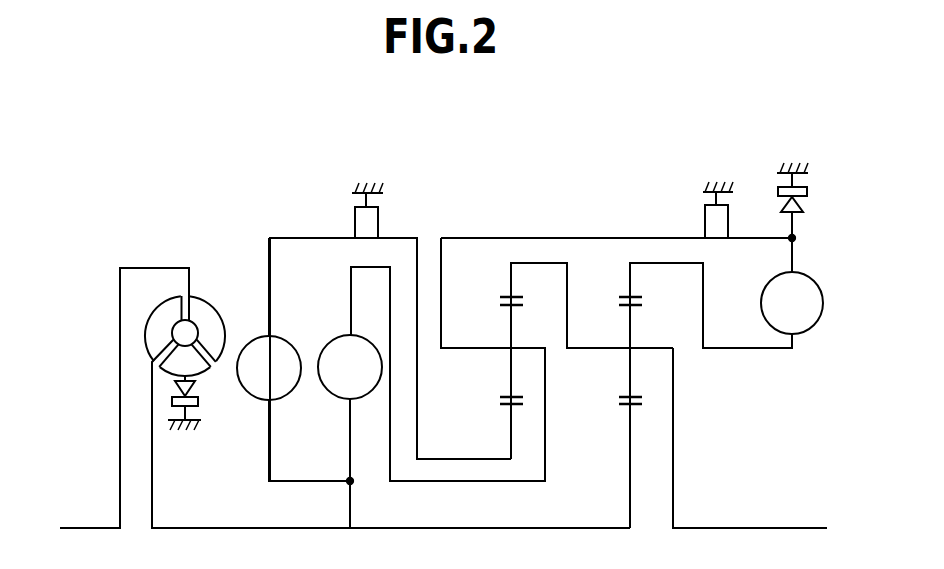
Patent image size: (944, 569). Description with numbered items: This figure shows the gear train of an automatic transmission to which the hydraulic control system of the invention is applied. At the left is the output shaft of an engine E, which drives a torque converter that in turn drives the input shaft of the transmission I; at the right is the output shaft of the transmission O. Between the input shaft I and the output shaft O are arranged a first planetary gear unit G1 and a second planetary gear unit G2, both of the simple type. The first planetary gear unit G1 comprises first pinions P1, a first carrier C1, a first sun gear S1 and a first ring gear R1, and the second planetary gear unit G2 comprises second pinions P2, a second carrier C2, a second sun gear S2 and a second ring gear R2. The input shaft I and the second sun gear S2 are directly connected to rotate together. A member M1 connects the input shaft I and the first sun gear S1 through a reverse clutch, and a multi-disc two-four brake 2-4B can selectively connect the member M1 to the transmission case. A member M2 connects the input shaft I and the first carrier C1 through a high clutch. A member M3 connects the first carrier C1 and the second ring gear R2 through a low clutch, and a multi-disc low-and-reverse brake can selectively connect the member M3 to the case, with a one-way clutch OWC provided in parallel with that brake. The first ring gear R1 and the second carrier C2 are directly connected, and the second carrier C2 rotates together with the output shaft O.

The output shaft of an engine E is at (93, 528).
The input shaft of the transmission I is at (245, 528).
The member M1 is at (293, 238).
The member M2 is at (392, 283).
The 2-4 brake 2-4B is at (355, 222).
The member M3 is at (520, 236).
The first planetary gear unit G1 is at (492, 255).
The first ring gear R1 is at (510, 287).
The first carrier C1 is at (465, 347).
The first pinions P1 is at (510, 377).
The first sun gear S1 is at (511, 437).
The second planetary gear unit G2 is at (618, 247).
The second ring gear R2 is at (630, 287).
The second carrier C2 is at (590, 347).
The second pinions P2 is at (630, 377).
The second sun gear S2 is at (630, 437).
The one-way clutch OWC is at (786, 206).
The output shaft of the transmission O is at (752, 528).